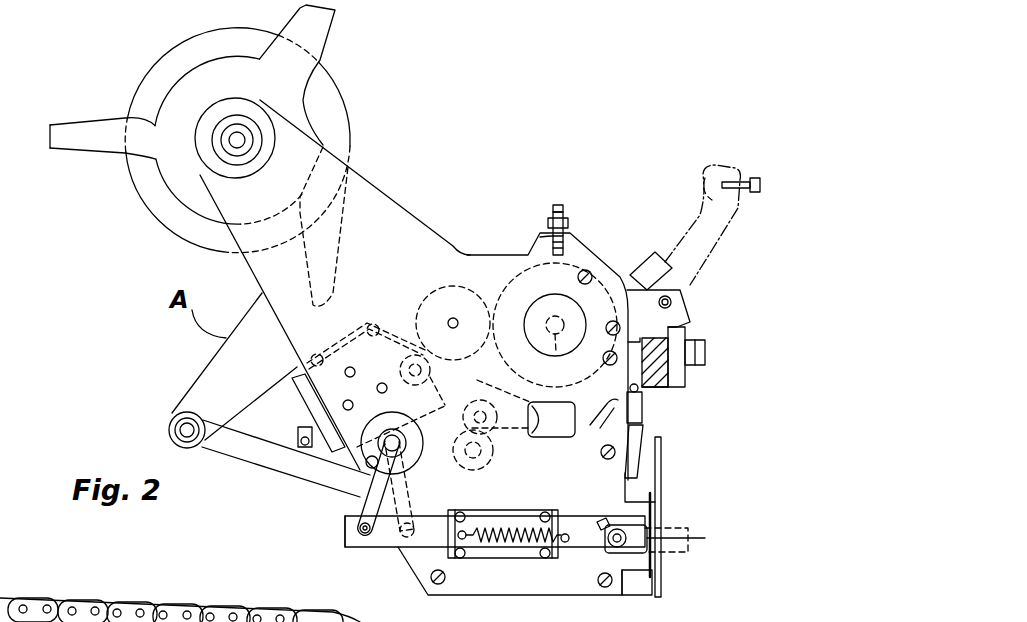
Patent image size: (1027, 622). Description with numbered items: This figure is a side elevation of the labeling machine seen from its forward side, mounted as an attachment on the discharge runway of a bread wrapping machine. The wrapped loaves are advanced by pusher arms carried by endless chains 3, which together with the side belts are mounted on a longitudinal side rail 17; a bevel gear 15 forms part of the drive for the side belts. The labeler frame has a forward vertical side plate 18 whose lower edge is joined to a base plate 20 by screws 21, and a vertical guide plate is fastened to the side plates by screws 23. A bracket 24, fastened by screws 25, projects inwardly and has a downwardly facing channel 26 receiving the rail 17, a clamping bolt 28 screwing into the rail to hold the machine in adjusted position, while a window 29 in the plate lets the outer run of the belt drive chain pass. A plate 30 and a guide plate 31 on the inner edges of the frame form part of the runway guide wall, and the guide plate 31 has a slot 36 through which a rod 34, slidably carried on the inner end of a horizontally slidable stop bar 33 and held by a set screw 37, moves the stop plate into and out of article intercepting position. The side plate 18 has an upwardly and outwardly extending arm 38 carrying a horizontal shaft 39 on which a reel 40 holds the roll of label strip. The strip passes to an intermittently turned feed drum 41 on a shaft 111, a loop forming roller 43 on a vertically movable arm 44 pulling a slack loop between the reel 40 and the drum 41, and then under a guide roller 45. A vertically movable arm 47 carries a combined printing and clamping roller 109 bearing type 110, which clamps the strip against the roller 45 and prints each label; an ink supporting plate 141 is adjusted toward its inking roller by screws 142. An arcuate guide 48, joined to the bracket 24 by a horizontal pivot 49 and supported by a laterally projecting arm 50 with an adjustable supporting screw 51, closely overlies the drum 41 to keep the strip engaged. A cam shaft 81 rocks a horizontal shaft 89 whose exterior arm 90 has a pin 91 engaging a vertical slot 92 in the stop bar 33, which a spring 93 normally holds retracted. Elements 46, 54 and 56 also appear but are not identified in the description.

The endless chains 3 is at (60, 600).
The bevel gear 15 is at (502, 584).
The longitudinal side rail 17 is at (658, 386).
The front vertical side plate 18 is at (485, 256).
The base plate 20 is at (645, 596).
The screws 21 is at (443, 584).
The screws 23 is at (605, 360).
The bracket 24 is at (690, 332).
The screws 25 is at (608, 322).
The downwardly facing channel 26 is at (652, 349).
The clamping bolt 28 is at (706, 360).
The windows 29 is at (545, 438).
The plate 30 is at (662, 476).
The guide plate 31 is at (662, 572).
The stop bar 33 is at (580, 548).
The rod 34 is at (690, 537).
The slot 36 is at (640, 522).
The set screw 37 is at (606, 522).
The arm 38 is at (395, 201).
The horizontal shaft 39 is at (234, 138).
The reel 40 is at (303, 100).
The feed drum 41 is at (503, 300).
The loop forming roller 43 is at (198, 414).
The vertically movable arm 44 is at (246, 448).
The guide roller 45 is at (436, 290).
The connecting rod 46 is at (382, 322).
The vertically movable arm 47 is at (462, 420).
The arcuate guide 48 is at (600, 246).
The horizontal pivot 49 is at (674, 302).
The laterally projecting arm 50 is at (568, 232).
The supporting screw 51 is at (540, 237).
The link 54 is at (648, 448).
The solenoid 56 is at (646, 416).
The cam shaft 81 is at (482, 468).
The horizontal shaft 89 is at (420, 458).
The arm 90 is at (396, 493).
The pin 91 is at (360, 538).
The vertical slot 92 is at (360, 522).
The spring 93 is at (505, 548).
The combined printing and clamping roller 109 is at (428, 372).
The type 110 is at (427, 353).
The shaft 111 is at (556, 350).
The ink supporting plate 141 is at (300, 420).
The screws 142 is at (298, 440).